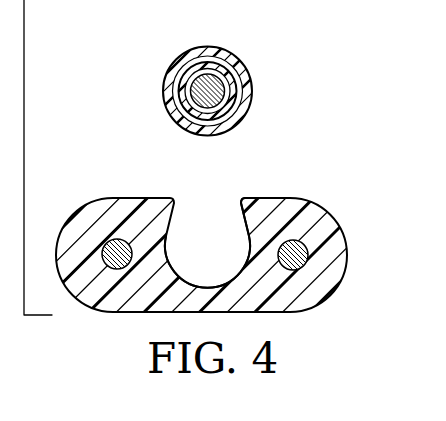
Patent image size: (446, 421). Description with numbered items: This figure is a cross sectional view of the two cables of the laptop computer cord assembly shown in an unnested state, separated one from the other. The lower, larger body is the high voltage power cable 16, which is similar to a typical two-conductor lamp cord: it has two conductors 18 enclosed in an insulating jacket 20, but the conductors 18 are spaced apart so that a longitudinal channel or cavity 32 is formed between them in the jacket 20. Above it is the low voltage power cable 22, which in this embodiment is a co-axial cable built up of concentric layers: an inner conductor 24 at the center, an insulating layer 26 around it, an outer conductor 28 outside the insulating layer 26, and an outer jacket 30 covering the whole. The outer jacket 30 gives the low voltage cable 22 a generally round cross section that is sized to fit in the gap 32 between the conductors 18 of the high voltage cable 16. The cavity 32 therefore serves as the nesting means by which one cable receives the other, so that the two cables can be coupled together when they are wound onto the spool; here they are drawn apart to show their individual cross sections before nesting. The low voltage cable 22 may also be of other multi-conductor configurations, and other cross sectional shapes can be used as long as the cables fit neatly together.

The high voltage power cable 16 is at (320, 290).
The conductors 18 is at (111, 271).
The insulating jacket 20 is at (287, 207).
The low voltage power cable 22 is at (251, 104).
The inner conductor 24 is at (226, 76).
The insulating layer 26 is at (199, 81).
The outer conductor 28 is at (180, 90).
The outer jacket 30 is at (217, 94).
The cavity 32 is at (200, 285).